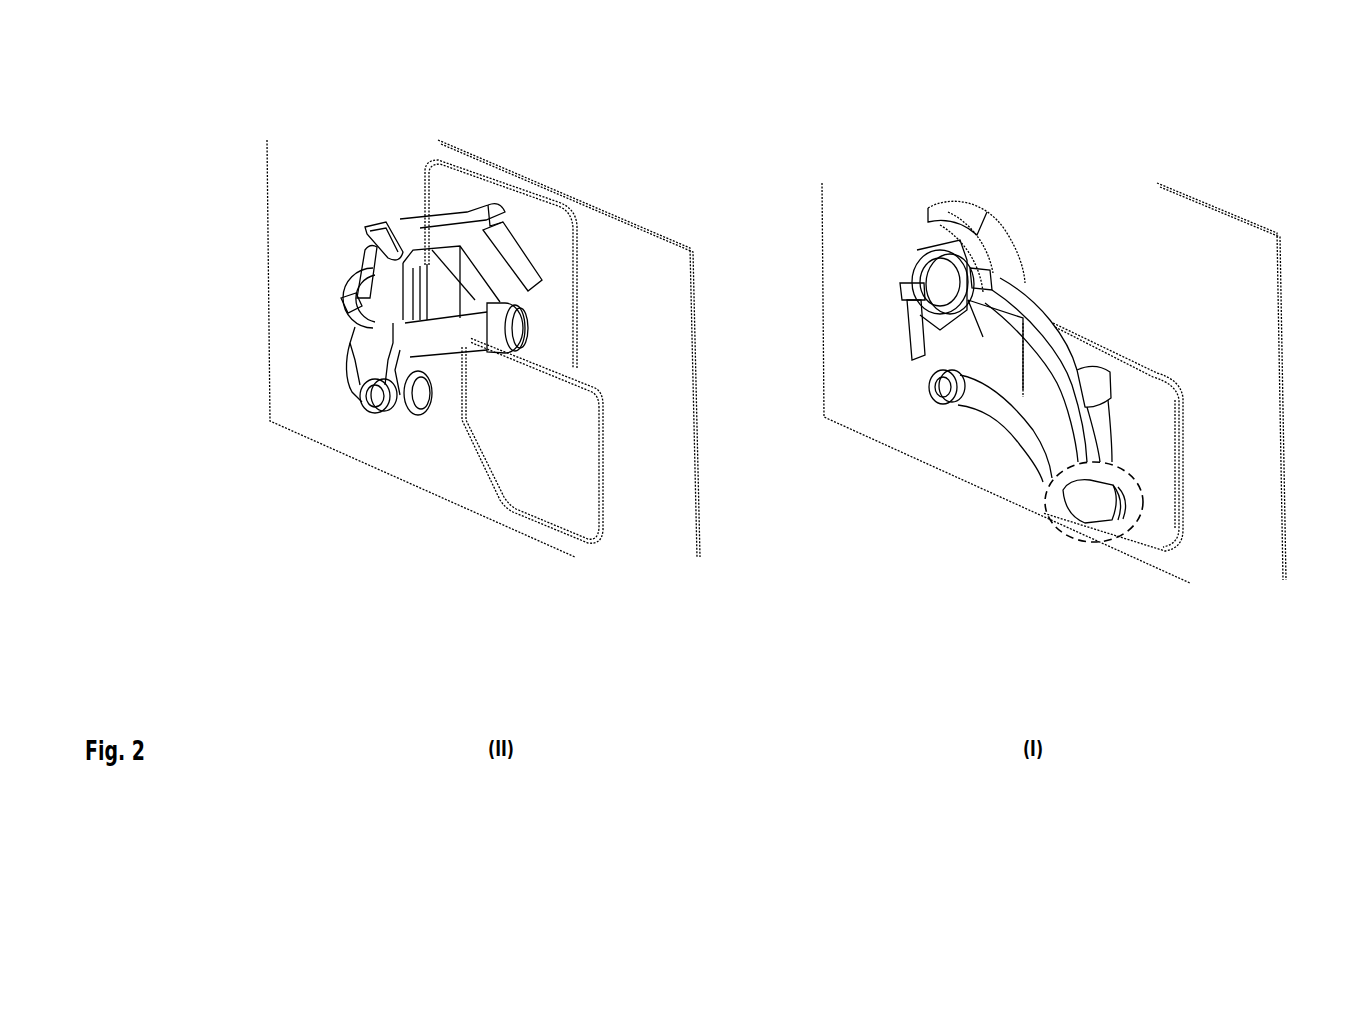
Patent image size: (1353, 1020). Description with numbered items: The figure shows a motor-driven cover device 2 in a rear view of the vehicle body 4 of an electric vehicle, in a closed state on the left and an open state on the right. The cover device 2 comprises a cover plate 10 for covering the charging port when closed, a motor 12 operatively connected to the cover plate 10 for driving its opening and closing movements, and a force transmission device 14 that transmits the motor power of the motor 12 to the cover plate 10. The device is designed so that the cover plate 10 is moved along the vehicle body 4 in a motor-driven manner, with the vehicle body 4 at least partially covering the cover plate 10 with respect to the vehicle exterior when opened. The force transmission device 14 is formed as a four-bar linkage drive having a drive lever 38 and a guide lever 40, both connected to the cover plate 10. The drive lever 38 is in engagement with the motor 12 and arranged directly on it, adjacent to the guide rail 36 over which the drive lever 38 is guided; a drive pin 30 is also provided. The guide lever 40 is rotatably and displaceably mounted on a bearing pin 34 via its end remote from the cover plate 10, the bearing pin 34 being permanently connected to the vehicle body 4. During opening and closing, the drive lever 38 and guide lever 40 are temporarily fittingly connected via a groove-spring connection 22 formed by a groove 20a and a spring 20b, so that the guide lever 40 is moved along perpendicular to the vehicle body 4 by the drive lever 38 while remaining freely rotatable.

The motor-driven cover device 2 is at (695, 592).
The vehicle body 4 is at (313, 413).
The cover plate 10 is at (543, 227).
The motor 12 is at (310, 299).
The force transmission device 14 is at (292, 380).
The groove 20a is at (512, 333).
The spring 20b is at (530, 287).
The groove-spring connection 22 is at (1085, 542).
The drive pin 30 is at (347, 304).
The bearing pin 34 is at (375, 398).
The guide rail 36 is at (388, 225).
The drive lever 38 is at (420, 237).
The guide lever 40 is at (412, 353).